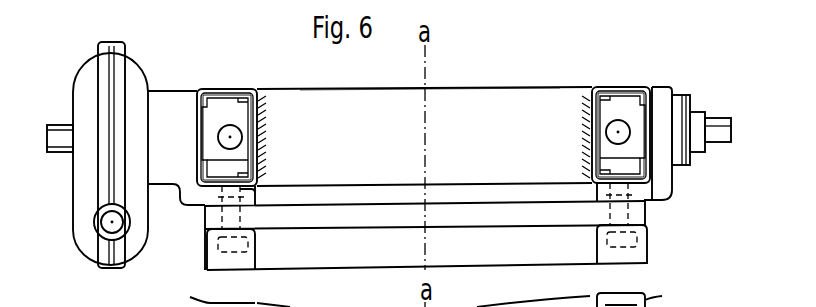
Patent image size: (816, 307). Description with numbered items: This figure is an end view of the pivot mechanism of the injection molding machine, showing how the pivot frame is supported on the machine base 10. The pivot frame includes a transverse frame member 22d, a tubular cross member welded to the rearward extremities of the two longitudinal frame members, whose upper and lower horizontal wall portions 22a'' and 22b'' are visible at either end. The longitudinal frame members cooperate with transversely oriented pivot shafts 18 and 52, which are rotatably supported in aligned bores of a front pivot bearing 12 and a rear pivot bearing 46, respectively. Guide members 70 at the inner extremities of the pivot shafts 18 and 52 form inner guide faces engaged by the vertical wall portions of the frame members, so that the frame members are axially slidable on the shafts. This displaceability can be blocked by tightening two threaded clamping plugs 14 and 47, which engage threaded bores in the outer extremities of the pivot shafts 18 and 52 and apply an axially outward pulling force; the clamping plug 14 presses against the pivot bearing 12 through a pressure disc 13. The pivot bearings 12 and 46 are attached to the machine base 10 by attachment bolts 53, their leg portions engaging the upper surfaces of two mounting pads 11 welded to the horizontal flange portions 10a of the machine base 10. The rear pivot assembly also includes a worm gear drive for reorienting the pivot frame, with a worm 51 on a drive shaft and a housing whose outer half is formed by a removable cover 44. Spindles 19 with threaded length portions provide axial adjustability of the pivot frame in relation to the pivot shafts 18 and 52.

The machine base 10 is at (347, 243).
The horizontal flange portions 10a is at (596, 214).
The mounting pads 11 is at (245, 216).
The front pivot bearing 12 is at (662, 181).
The pressure disc 13 is at (683, 97).
The threaded clamping plug 14 is at (714, 122).
The pivot shaft 18 is at (600, 152).
The spindles 19 is at (240, 135).
The upper and lower horizontal wall portions 22a'' is at (622, 97).
The upper and lower horizontal wall portions 22b'' is at (228, 104).
The transverse frame member 22d is at (493, 100).
The removable cover 44 is at (82, 222).
The rear pivot bearing 46 is at (165, 162).
The threaded clamping plug 47 is at (58, 133).
The worm 51 is at (103, 225).
The pivot shaft 52 is at (238, 157).
The attachment bolts 53 is at (250, 246).
The guide members 70 is at (250, 90).